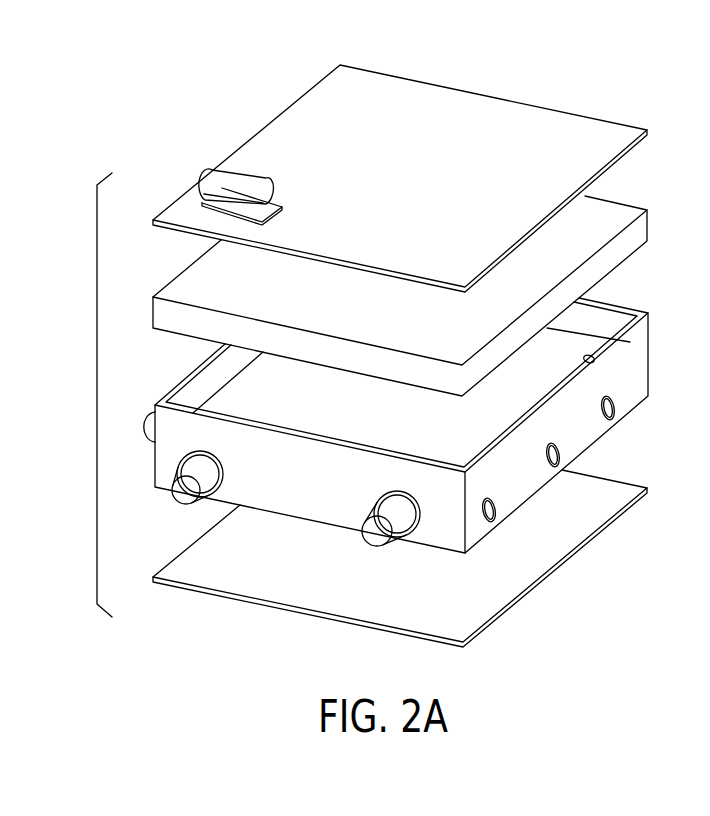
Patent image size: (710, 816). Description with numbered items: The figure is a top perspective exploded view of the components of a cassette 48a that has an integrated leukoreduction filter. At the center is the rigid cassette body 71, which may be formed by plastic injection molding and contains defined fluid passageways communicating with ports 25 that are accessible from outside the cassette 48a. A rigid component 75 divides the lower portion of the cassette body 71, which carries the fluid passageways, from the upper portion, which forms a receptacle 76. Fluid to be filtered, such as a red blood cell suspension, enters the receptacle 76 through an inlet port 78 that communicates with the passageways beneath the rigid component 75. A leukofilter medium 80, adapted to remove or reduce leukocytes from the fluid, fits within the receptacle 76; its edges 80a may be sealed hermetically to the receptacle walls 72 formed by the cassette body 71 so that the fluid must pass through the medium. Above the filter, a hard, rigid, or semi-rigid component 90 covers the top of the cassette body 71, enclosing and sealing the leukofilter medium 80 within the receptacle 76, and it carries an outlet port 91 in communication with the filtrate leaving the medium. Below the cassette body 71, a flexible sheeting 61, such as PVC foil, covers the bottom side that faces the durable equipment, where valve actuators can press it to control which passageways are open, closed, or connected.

The cassette 48a is at (503, 79).
The component 90 is at (569, 111).
The outlet port 91 is at (232, 177).
The leukofilter medium 80 is at (650, 223).
The edges 80a is at (606, 264).
The receptacle walls 72 is at (598, 312).
The rigid cassette body 71 is at (627, 397).
The rigid component 75 is at (570, 348).
The inlet port 78 is at (596, 352).
The receptacle 76 is at (243, 407).
The ports 25 is at (186, 490).
The flexible sheeting 61 is at (560, 540).